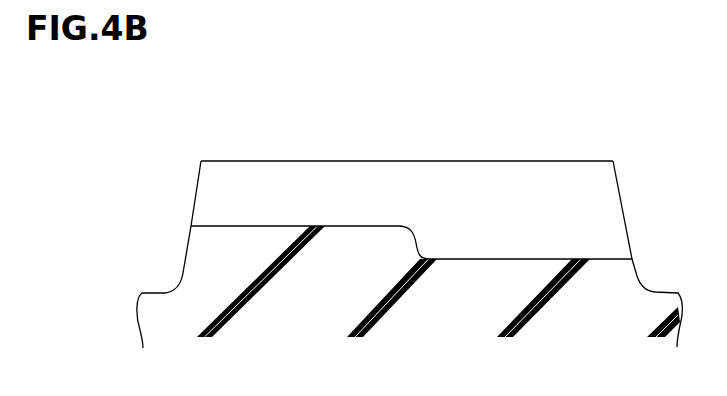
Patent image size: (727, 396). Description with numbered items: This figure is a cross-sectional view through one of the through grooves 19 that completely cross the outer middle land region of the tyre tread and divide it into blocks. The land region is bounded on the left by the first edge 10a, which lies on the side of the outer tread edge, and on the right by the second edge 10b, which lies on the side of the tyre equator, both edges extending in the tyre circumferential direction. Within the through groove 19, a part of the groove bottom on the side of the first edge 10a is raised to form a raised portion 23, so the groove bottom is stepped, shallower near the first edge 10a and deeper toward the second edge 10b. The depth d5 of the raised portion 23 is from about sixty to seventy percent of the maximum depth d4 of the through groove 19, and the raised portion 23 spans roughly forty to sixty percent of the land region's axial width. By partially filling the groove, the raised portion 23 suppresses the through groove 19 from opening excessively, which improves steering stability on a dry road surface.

The first edge 10a is at (201, 161).
The second edge 10b is at (613, 161).
The raised portion 23 is at (337, 225).
The through groove 19 is at (436, 237).
The depth of the raised portion d5 is at (256, 225).
The maximum depth of the through groove d4 is at (547, 258).